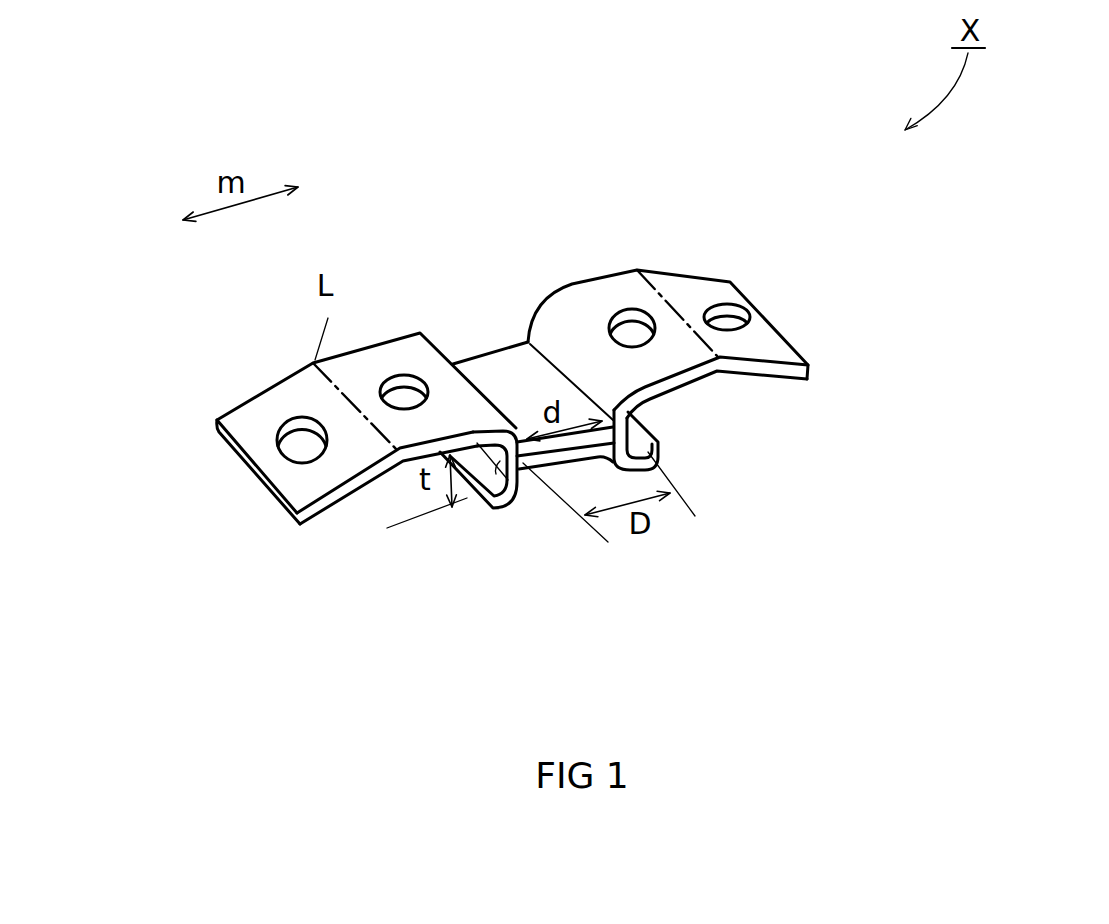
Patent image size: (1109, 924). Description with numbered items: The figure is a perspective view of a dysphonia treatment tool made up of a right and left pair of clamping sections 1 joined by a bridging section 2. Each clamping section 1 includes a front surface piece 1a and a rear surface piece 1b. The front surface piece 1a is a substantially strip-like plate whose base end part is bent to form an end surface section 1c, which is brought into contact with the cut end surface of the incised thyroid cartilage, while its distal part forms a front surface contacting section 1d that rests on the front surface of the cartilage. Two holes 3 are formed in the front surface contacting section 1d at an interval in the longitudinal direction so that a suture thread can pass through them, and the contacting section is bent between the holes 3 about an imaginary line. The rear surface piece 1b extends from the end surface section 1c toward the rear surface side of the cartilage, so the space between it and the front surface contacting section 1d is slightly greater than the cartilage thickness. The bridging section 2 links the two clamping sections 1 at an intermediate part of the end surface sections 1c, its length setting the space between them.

The clamping section 1 is at (246, 405).
The front surface piece 1a is at (300, 366).
The rear surface piece 1b is at (470, 498).
The end surface section 1c is at (528, 335).
The front surface contacting section 1d is at (377, 470).
The bridging section 2 is at (505, 365).
The hole 3 is at (402, 393).